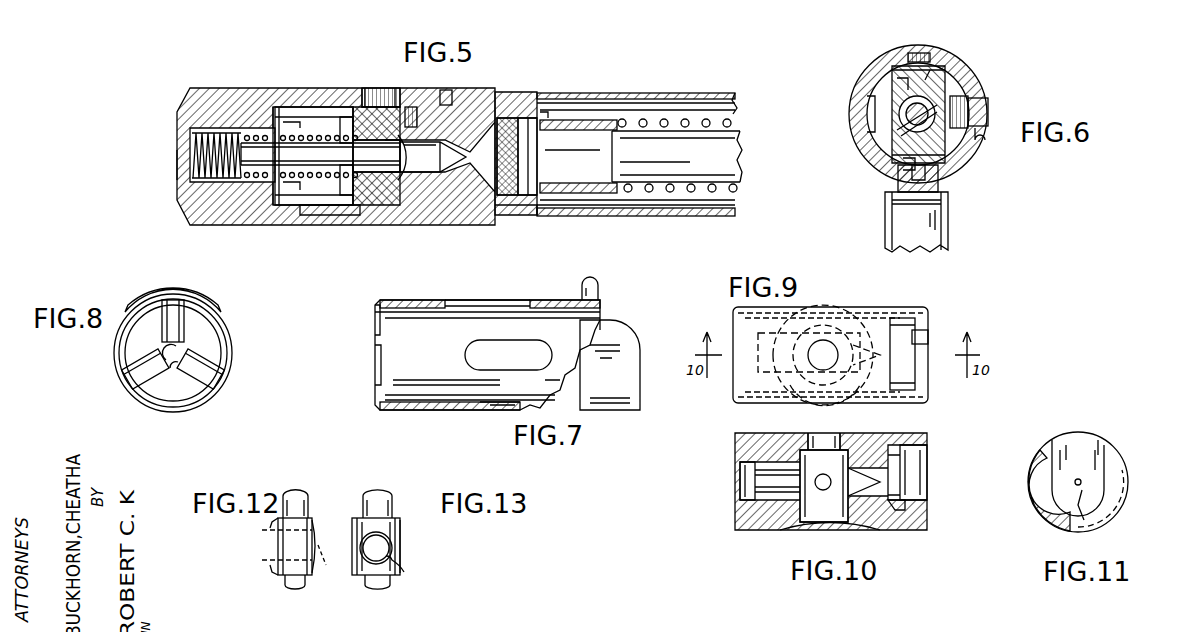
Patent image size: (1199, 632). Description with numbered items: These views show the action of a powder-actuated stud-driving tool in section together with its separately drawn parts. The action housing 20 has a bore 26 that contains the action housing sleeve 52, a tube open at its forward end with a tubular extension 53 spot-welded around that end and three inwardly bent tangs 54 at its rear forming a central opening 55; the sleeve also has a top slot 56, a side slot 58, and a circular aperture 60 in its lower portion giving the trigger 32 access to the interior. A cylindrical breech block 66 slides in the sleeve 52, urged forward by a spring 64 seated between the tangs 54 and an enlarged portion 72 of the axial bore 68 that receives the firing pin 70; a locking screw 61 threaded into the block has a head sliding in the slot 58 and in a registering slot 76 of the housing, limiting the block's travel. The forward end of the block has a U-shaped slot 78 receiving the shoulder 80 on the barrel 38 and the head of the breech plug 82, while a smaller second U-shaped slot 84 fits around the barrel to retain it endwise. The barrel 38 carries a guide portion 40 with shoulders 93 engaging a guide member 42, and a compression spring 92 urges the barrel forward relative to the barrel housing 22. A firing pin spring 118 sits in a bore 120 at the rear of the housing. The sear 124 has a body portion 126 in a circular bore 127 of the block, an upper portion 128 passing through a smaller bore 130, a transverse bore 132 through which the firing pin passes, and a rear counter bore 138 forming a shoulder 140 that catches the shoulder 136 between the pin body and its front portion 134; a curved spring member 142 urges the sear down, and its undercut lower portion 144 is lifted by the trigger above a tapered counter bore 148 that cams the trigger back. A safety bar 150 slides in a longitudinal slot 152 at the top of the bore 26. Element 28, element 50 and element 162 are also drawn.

In FIG. 5, the action housing 20 is at (256, 81).
In FIG. 6, the action housing 20 is at (975, 66).
In FIG. 5, the barrel housing 22 is at (616, 220).
In FIG. 5, the bore 26 is at (335, 210).
In FIG. 6, the bore 26 is at (868, 111).
In FIG. 6, the stem 28 is at (942, 233).
In FIG. 6, the trigger 32 is at (916, 195).
In FIG. 5, the barrel 38 is at (731, 151).
In FIG. 5, the guide portion 40 is at (598, 180).
In FIG. 5, the guide member 42 is at (577, 120).
In FIG. 6, the passage 50 is at (940, 214).
In FIG. 5, the action housing sleeve 52 is at (402, 208).
In FIG. 8, the action housing sleeve 52 is at (224, 336).
In FIG. 7, the action housing sleeve 52 is at (463, 418).
In FIG. 5, the tubular extension 53 is at (530, 216).
In FIG. 8, the tubular extension 53 is at (224, 386).
In FIG. 7, the tubular extension 53 is at (628, 352).
In FIG. 5, the tangs 54 is at (268, 212).
In FIG. 8, the tangs 54 is at (208, 372).
In FIG. 7, the tangs 54 is at (377, 330).
In FIG. 5, the central opening 55 is at (298, 137).
In FIG. 8, the central opening 55 is at (175, 375).
In FIG. 7, the central opening 55 is at (377, 346).
In FIG. 7, the slot 56 is at (478, 306).
In FIG. 5, the slot 58 is at (372, 98).
In FIG. 6, the slot 58 is at (972, 100).
In FIG. 7, the slot 58 is at (470, 358).
In FIG. 7, the circular aperture 60 is at (500, 410).
In FIG. 5, the locking screw 61 is at (447, 93).
In FIG. 6, the locking screw 61 is at (988, 110).
In FIG. 5, the spring 64 is at (302, 180).
In FIG. 5, the breech block 66 is at (437, 190).
In FIG. 9, the breech block 66 is at (811, 303).
In FIG. 10, the breech block 66 is at (878, 524).
In FIG. 11, the breech block 66 is at (1140, 487).
In FIG. 5, the axial bore 68 is at (348, 180).
In FIG. 9, the axial bore 68 is at (792, 372).
In FIG. 10, the axial bore 68 is at (785, 520).
In FIG. 5, the firing pin 70 is at (302, 164).
In FIG. 6, the firing pin 70 is at (912, 118).
In FIG. 5, the enlarged portion of bore 72 is at (348, 130).
In FIG. 10, the enlarged portion of bore 72 is at (742, 493).
In FIG. 5, the slot 76 is at (380, 98).
In FIG. 6, the slot 76 is at (982, 130).
In FIG. 9, the U-shaped slot 78 is at (900, 320).
In FIG. 10, the U-shaped slot 78 is at (905, 530).
In FIG. 11, the U-shaped slot 78 is at (1050, 505).
In FIG. 5, the shoulder 80 is at (518, 162).
In FIG. 5, the breech plug 82 is at (505, 118).
In FIG. 9, the second U-shaped slot 84 is at (925, 335).
In FIG. 10, the second U-shaped slot 84 is at (928, 480).
In FIG. 11, the second U-shaped slot 84 is at (1095, 448).
In FIG. 5, the compression spring 92 is at (712, 124).
In FIG. 5, the shoulders 93 is at (545, 112).
In FIG. 5, the firing pin spring 118 is at (185, 144).
In FIG. 5, the bore 120 is at (178, 185).
In FIG. 5, the sear 124 is at (492, 218).
In FIG. 6, the sear 124 is at (963, 148).
In FIG. 12, the sear 124 is at (326, 512).
In FIG. 13, the sear 124 is at (408, 512).
In FIG. 12, the central body portion 126 is at (283, 545).
In FIG. 13, the central body portion 126 is at (396, 528).
In FIG. 9, the circular bore 127 is at (840, 374).
In FIG. 10, the circular bore 127 is at (812, 524).
In FIG. 6, the upwardly extending cylindrical portion 128 is at (940, 66).
In FIG. 12, the upwardly extending cylindrical portion 128 is at (294, 505).
In FIG. 13, the upwardly extending cylindrical portion 128 is at (376, 505).
In FIG. 9, the smaller circular bore 130 is at (826, 352).
In FIG. 10, the smaller circular bore 130 is at (815, 446).
In FIG. 6, the circular bore 132 is at (880, 135).
In FIG. 12, the circular bore 132 is at (318, 572).
In FIG. 13, the circular bore 132 is at (404, 572).
In FIG. 5, the front portion 134 is at (433, 157).
In FIG. 5, the shoulder 136 is at (396, 147).
In FIG. 5, the counter bore portion 138 is at (410, 125).
In FIG. 6, the counter bore portion 138 is at (882, 172).
In FIG. 12, the counter bore portion 138 is at (262, 533).
In FIG. 13, the counter bore portion 138 is at (363, 548).
In FIG. 5, the shoulder 140 is at (406, 171).
In FIG. 12, the shoulder 140 is at (262, 562).
In FIG. 13, the shoulder 140 is at (388, 543).
In FIG. 6, the spring member 142 is at (898, 74).
In FIG. 12, the lower portion 144 is at (293, 582).
In FIG. 13, the lower portion 144 is at (378, 583).
In FIG. 9, the tapered counter bore 148 is at (810, 398).
In FIG. 10, the tapered counter bore 148 is at (848, 530).
In FIG. 6, the safety bar 150 is at (916, 52).
In FIG. 6, the slot 152 is at (930, 70).
In FIG. 8, the tab 162 is at (186, 305).
In FIG. 7, the tab 162 is at (600, 298).